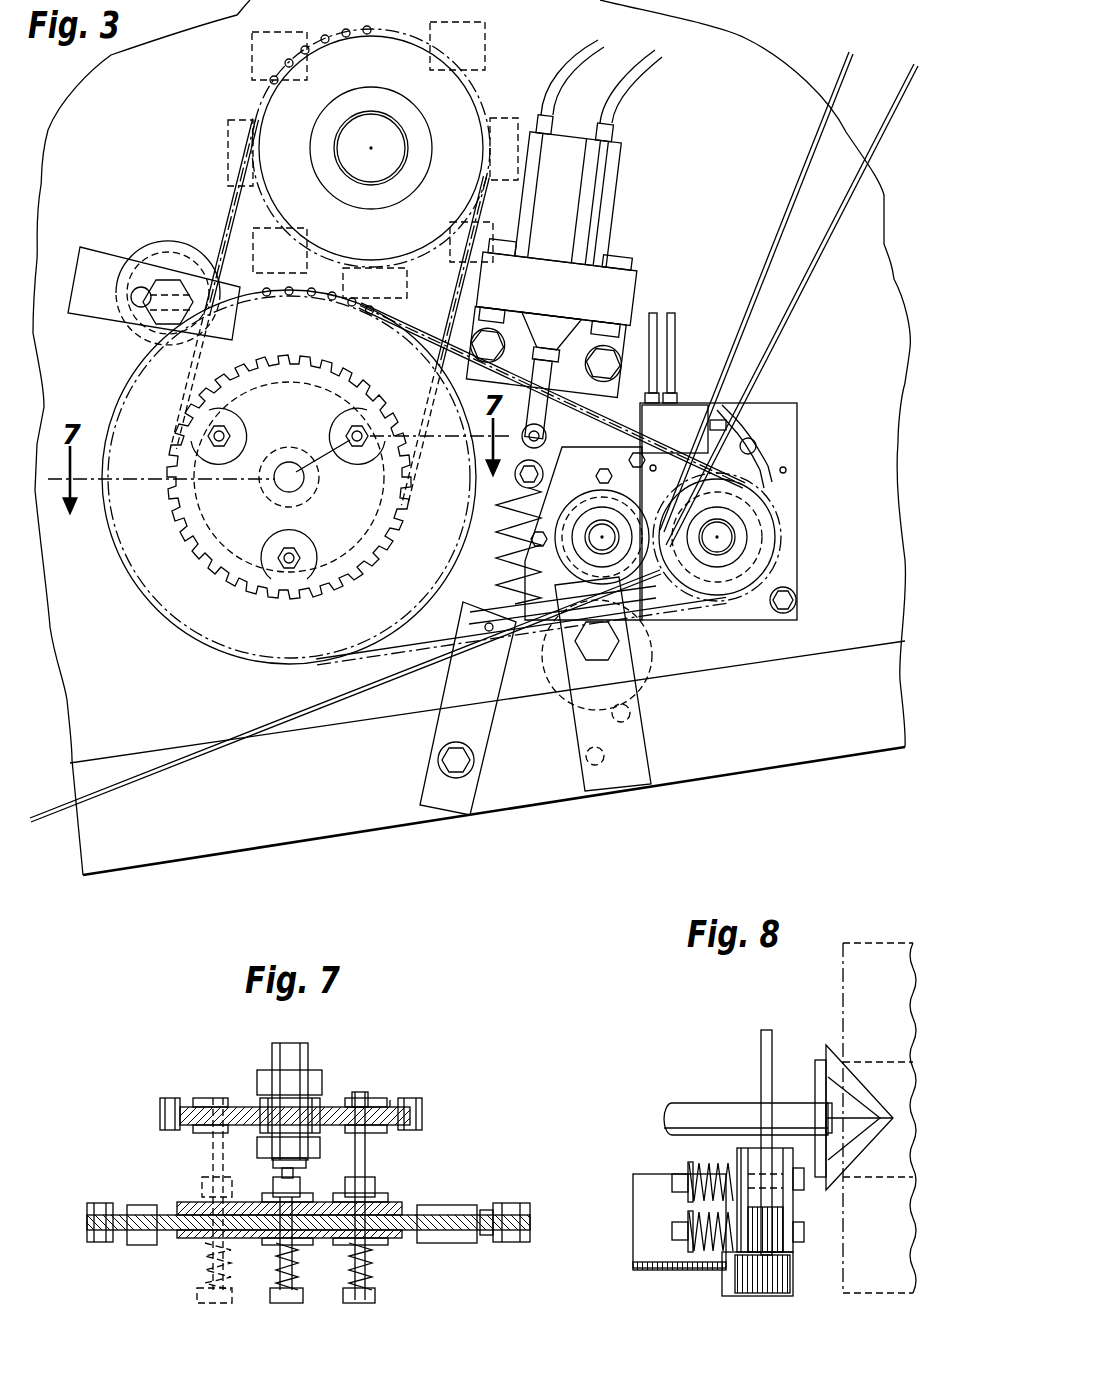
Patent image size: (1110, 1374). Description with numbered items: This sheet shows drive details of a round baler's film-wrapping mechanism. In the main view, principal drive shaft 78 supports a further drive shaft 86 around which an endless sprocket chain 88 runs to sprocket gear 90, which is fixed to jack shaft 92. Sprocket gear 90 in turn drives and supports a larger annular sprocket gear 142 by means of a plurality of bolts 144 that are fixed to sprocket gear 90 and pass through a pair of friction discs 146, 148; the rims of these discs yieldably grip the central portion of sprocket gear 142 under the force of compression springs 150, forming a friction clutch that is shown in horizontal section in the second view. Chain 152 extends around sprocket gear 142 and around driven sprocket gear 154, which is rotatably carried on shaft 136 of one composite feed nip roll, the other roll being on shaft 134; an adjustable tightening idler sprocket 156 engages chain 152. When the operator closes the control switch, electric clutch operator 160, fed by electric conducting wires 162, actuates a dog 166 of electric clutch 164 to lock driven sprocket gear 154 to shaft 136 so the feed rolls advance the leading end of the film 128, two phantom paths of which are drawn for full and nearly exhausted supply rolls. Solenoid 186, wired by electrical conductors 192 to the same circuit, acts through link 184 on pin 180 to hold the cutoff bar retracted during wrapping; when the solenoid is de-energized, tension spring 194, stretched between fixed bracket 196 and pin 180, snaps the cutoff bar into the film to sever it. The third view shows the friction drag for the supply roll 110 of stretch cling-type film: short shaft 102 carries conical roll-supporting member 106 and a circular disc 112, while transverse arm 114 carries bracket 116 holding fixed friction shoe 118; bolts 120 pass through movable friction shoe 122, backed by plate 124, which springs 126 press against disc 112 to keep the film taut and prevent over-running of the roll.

In FIG. 3, the shaft 78 is at (338, 162).
In FIG. 3, the drive shaft 86 is at (304, 93).
In FIG. 3, the endless sprocket chain 88 is at (237, 209).
In FIG. 7, the endless sprocket chain 88 is at (170, 1097).
In FIG. 3, the sprocket gear 90 is at (150, 598).
In FIG. 7, the sprocket gear 90 is at (390, 1100).
In FIG. 3, the jack shaft 92 is at (306, 487).
In FIG. 7, the jack shaft 92 is at (272, 1062).
In FIG. 3, the leading end of the film 128 is at (797, 200).
In FIG. 3, the shaft 134 is at (588, 541).
In FIG. 3, the shaft 136 is at (720, 552).
In FIG. 3, the sprocket gear 142 is at (235, 617).
In FIG. 7, the sprocket gear 142 is at (442, 1230).
In FIG. 3, the bolts 144 is at (237, 430).
In FIG. 7, the bolts 144 is at (210, 1160).
In FIG. 7, the friction disc 146 is at (405, 1203).
In FIG. 7, the friction disc 148 is at (397, 1237).
In FIG. 7, the compression springs 150 is at (203, 1260).
In FIG. 3, the chain 152 is at (423, 645).
In FIG. 7, the chain 152 is at (513, 1212).
In FIG. 3, the driven sprocket gear 154 is at (755, 528).
In FIG. 3, the adjustable tightening idler sprocket 156 is at (647, 680).
In FIG. 3, the electric clutch operator 160 is at (682, 422).
In FIG. 3, the electric conducting wires 162 is at (670, 313).
In FIG. 3, the electric clutch 164 is at (788, 427).
In FIG. 3, the dog 166 is at (764, 465).
In FIG. 3, the pin 180 is at (515, 477).
In FIG. 3, the link 184 is at (542, 415).
In FIG. 3, the solenoid 186 is at (593, 207).
In FIG. 3, the electrical conductors 192 is at (590, 67).
In FIG. 3, the tension spring 194 is at (492, 548).
In FIG. 3, the fixed bracket 196 is at (492, 733).
In FIG. 8, the short shaft 102 is at (748, 1120).
In FIG. 8, the conical roll-supporting member 106 is at (833, 1047).
In FIG. 8, the roll of plastic film 110 is at (882, 951).
In FIG. 8, the circular disc 112 is at (765, 1032).
In FIG. 8, the transverse arm 114 is at (649, 1270).
In FIG. 8, the bracket 116 is at (761, 1296).
In FIG. 8, the friction shoe 118 is at (793, 1192).
In FIG. 8, the bolts 120 is at (677, 1177).
In FIG. 8, the movable friction shoe 122 is at (731, 1103).
In FIG. 8, the plate 124 is at (724, 1270).
In FIG. 8, the springs 126 is at (716, 1162).